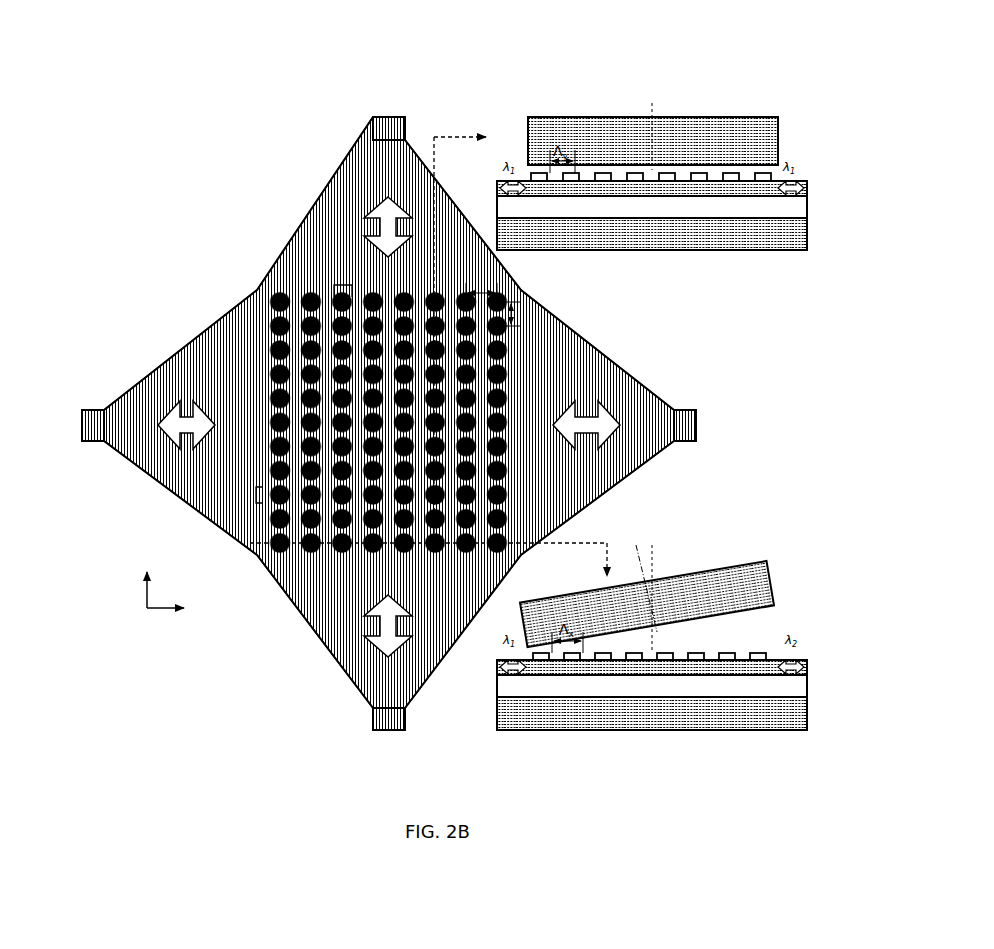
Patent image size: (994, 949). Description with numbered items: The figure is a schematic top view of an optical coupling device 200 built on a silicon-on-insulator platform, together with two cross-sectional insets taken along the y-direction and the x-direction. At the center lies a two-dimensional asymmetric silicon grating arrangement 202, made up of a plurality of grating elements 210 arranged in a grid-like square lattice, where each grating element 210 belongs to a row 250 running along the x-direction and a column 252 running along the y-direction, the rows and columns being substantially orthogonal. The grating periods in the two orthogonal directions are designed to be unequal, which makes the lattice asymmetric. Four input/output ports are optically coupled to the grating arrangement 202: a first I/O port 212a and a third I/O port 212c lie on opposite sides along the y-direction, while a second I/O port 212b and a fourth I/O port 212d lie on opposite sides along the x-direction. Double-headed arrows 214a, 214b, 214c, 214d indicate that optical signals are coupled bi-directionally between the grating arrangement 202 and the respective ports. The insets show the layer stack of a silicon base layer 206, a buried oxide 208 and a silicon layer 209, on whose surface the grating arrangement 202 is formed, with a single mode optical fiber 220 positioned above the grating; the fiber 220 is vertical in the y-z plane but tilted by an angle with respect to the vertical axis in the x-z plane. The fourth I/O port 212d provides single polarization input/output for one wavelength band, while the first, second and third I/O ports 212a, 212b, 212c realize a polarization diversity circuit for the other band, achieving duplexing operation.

The optical coupling device 200 is at (153, 73).
The grating arrangement 202 is at (300, 562).
The silicon base layer 206 is at (768, 242).
The buried oxide 208 is at (652, 446).
The silicon layer 209 is at (812, 196).
The grating elements 210 is at (304, 297).
The first I/O port 212a is at (372, 120).
The second I/O port 212b is at (98, 408).
The third I/O port 212c is at (379, 732).
The fourth I/O port 212d is at (698, 414).
The double-headed arrow 214a is at (374, 205).
The double-headed arrow 214b is at (166, 402).
The double-headed arrow 214c is at (390, 657).
The double-headed arrow 214d is at (590, 432).
The optical fiber 220 is at (738, 128).
The row 250 is at (256, 496).
The column 252 is at (343, 283).